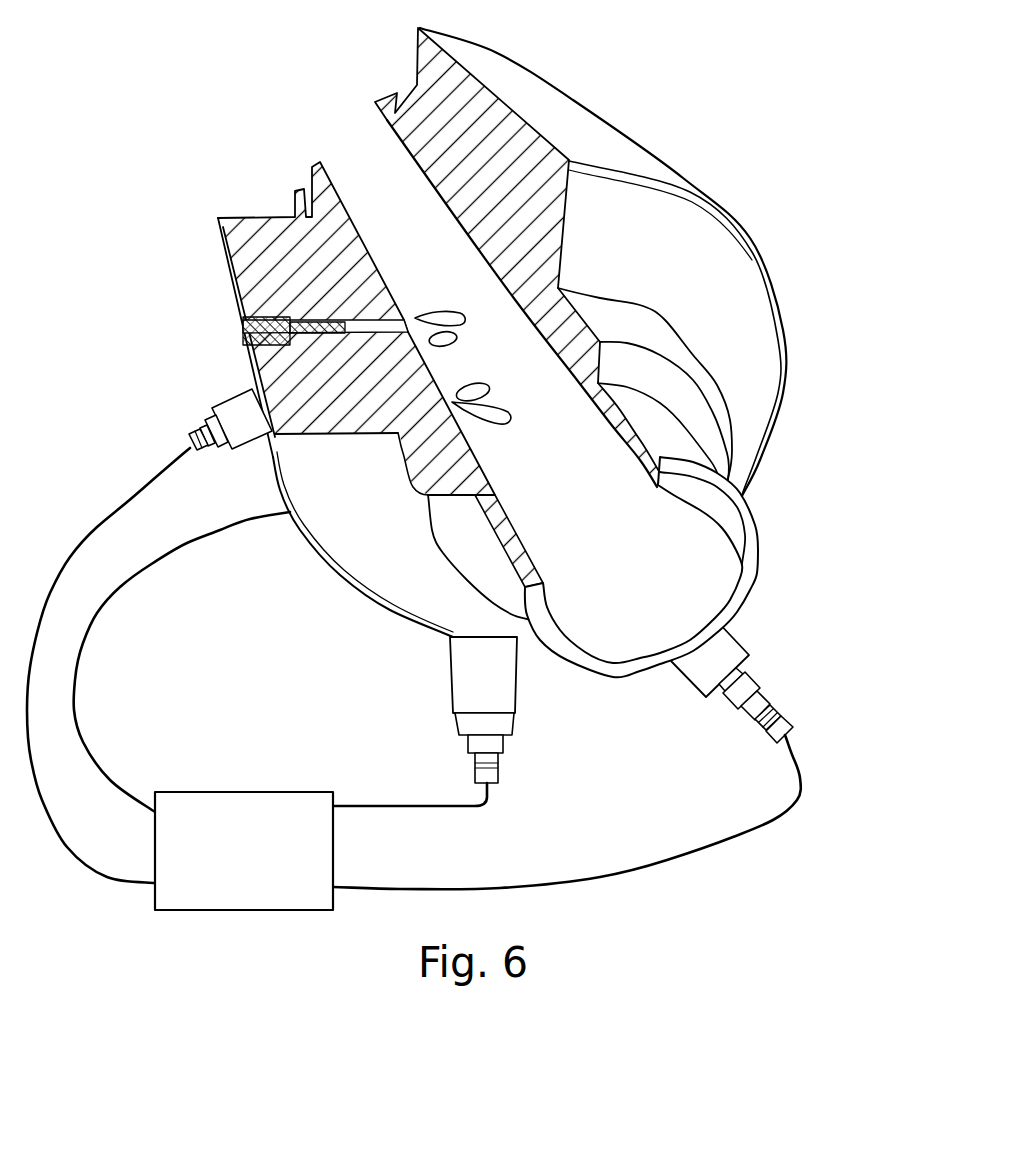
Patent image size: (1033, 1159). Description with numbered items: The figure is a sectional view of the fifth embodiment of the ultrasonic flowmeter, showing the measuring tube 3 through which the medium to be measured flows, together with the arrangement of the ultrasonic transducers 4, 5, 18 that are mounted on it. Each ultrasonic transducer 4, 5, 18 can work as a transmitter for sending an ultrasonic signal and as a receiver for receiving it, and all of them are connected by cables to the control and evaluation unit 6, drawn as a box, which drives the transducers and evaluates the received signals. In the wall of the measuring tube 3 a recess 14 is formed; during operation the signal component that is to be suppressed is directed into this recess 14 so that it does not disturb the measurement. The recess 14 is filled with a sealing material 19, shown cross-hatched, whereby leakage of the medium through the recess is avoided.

The measuring tube 3 is at (742, 583).
The ultrasonic transducer 4 is at (213, 410).
The ultrasonic transducer 5 is at (755, 663).
The control and evaluation unit 6 is at (252, 837).
The recess 14 is at (385, 327).
The ultrasonic transducer 18 is at (520, 727).
The sealing material 19 is at (243, 327).